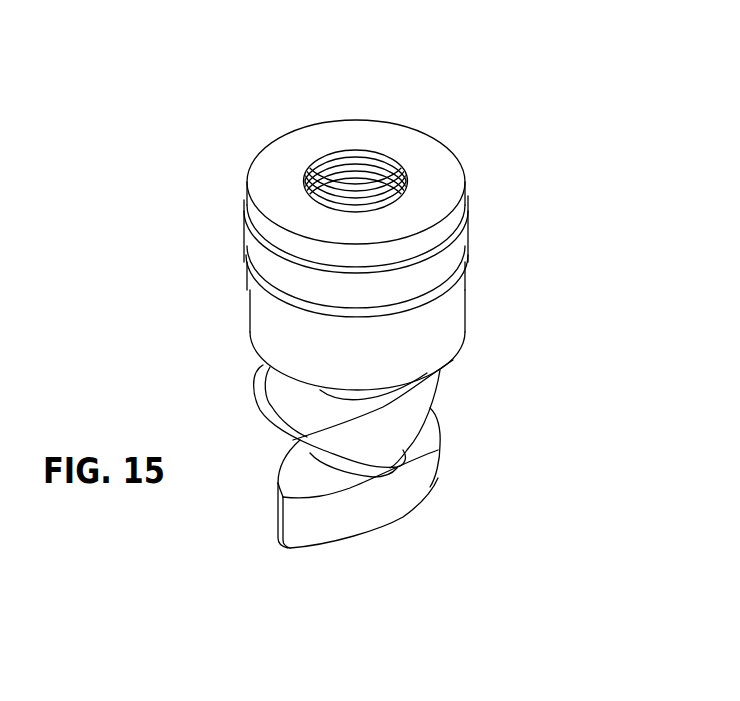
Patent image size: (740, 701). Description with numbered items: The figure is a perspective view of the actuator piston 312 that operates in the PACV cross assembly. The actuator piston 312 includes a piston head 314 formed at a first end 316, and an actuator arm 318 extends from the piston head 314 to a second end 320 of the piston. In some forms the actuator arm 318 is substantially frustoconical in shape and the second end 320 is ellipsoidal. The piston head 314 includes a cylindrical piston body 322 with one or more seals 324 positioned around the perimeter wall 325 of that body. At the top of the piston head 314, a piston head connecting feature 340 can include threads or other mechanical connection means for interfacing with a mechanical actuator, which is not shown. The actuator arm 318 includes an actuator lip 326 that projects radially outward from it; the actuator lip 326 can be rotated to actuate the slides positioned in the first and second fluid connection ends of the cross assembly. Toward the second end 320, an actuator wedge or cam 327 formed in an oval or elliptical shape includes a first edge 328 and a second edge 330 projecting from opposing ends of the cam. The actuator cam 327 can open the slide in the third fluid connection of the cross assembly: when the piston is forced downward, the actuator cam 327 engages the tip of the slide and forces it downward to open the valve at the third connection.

The actuator piston 312 is at (515, 85).
The piston head 314 is at (343, 128).
The first end 316 is at (427, 162).
The actuator arm 318 is at (254, 376).
The second end 320 is at (407, 515).
The cylindrical piston body 322 is at (450, 330).
The seal 324 is at (463, 217).
The perimeter wall 325 is at (267, 263).
The actuator lip 326 is at (383, 450).
The actuator cam 327 is at (308, 527).
The first edge 328 is at (278, 520).
The second edge 330 is at (440, 456).
The piston head connecting feature 340 is at (333, 184).